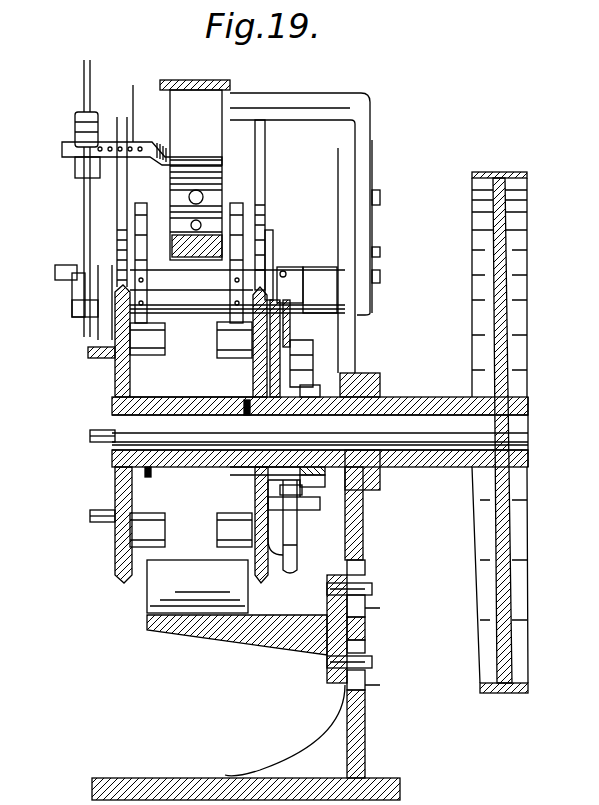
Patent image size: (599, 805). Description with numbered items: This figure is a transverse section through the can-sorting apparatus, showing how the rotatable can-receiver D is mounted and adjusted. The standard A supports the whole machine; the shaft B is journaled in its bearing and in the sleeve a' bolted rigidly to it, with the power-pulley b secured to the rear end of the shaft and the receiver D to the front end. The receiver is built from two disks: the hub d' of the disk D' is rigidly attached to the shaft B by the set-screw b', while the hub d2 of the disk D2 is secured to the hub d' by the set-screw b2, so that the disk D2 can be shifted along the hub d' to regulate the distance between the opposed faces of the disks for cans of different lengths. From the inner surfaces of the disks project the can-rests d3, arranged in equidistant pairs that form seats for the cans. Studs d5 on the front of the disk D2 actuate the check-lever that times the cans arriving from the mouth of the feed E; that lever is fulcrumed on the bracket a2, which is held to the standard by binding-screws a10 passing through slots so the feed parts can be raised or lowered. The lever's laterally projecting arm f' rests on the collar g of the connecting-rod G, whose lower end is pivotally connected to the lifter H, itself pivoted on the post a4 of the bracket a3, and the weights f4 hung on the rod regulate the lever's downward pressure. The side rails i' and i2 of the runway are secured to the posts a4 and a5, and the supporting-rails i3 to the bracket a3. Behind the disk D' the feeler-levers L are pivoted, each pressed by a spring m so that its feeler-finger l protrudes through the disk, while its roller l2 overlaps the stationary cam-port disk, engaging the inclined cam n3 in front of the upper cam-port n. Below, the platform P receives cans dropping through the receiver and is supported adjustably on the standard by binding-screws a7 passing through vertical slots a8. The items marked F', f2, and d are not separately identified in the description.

The standard A is at (246, 625).
The power-pulley b is at (510, 432).
The sleeve a' is at (320, 424).
The shaft B is at (320, 432).
The can-receiver D is at (107, 341).
The disk D2 is at (108, 525).
The disk D' is at (245, 435).
The can-rests d3 is at (191, 434).
The studs d5 is at (81, 440).
The bracket a2 is at (301, 221).
The binding-screws a10 is at (391, 236).
The slide F' is at (195, 170).
The feed E is at (185, 250).
The bracket a3 is at (237, 291).
The laterally-projecting arm f' is at (130, 153).
The weights f4 is at (73, 198).
The rod f2 is at (129, 103).
The collar g is at (76, 173).
The connecting-rod G is at (89, 273).
The post a4 is at (106, 256).
The lifter H is at (85, 323).
The side rail i2 is at (127, 202).
The supporting-rails i3 is at (189, 253).
The side rail i' is at (266, 205).
The post a5 is at (279, 265).
The spring m is at (285, 300).
The upper cam-port n is at (299, 343).
The roller l2 is at (302, 430).
The feeler-finger l is at (264, 444).
The feeler-levers L is at (288, 518).
The inclined cam n3 is at (302, 492).
The piece d is at (319, 477).
The hub d' is at (245, 479).
The hub d2 is at (192, 386).
The set-screw b' is at (227, 394).
The set-screw b2 is at (157, 483).
The platform P is at (231, 621).
The binding-screws a7 is at (364, 625).
The vertical slots a8 is at (382, 647).